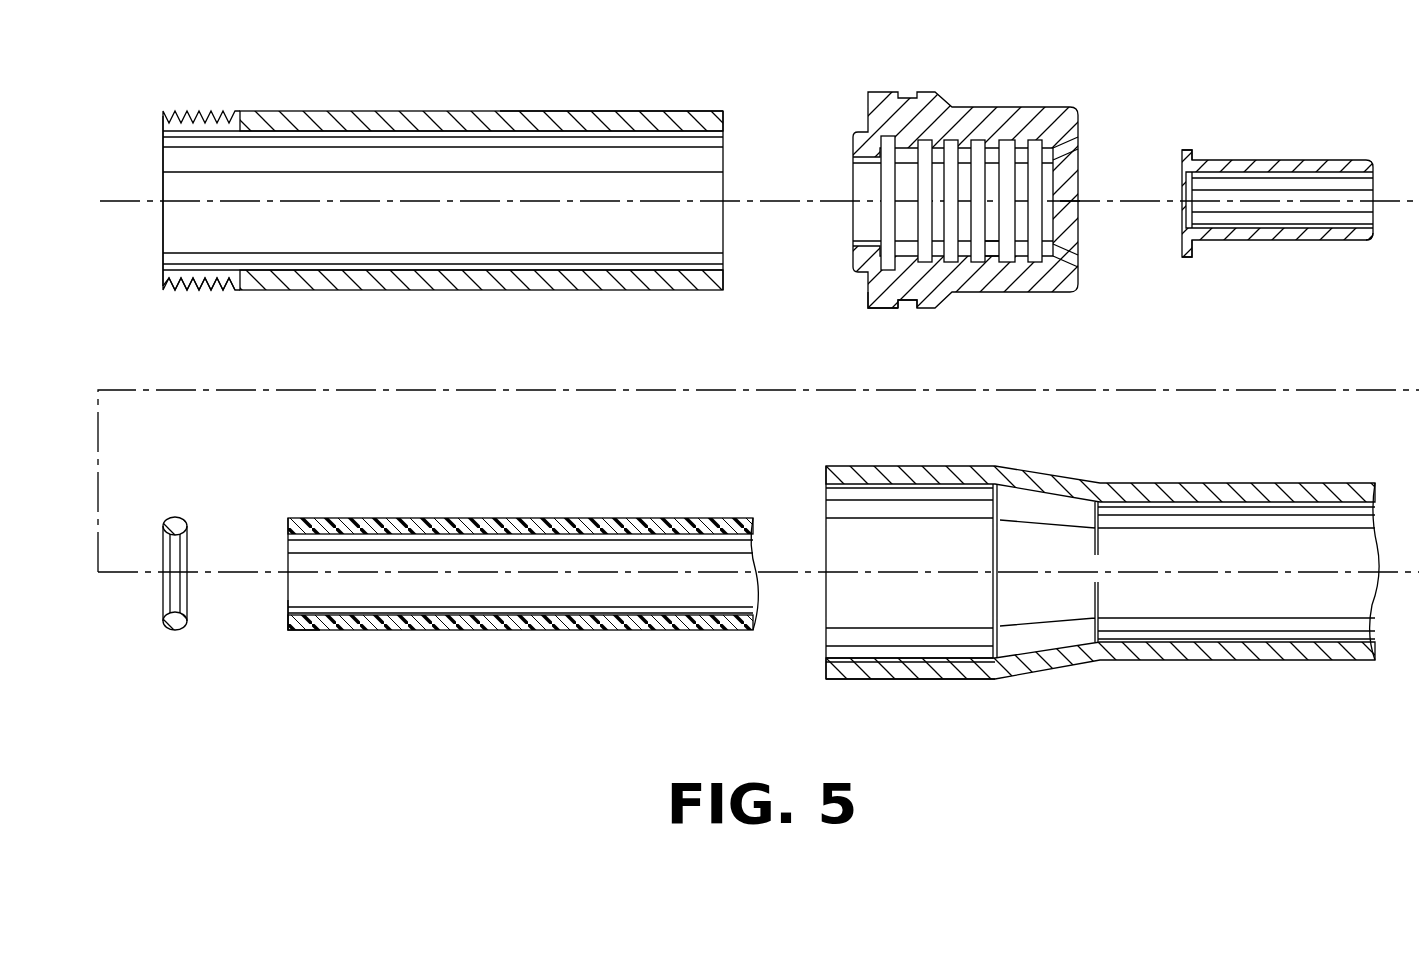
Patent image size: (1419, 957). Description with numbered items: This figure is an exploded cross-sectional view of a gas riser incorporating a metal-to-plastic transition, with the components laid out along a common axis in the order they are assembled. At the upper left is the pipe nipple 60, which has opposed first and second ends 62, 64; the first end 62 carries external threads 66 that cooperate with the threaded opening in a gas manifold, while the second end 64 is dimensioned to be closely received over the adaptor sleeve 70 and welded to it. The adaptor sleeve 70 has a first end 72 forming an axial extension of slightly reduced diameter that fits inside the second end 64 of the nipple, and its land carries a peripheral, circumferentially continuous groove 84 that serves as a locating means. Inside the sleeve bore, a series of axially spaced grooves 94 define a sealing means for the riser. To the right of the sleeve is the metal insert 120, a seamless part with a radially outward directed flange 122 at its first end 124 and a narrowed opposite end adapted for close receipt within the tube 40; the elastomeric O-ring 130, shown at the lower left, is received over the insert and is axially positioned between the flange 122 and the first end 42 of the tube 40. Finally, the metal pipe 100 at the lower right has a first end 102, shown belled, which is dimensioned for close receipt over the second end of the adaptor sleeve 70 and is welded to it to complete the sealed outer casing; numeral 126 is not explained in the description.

The pipe nipple 60 is at (508, 106).
The second end 64 is at (676, 120).
The first end 62 is at (158, 274).
The external threads 66 is at (214, 282).
The adaptor sleeve 70 is at (981, 100).
The first end 72 is at (882, 308).
The groove 84 is at (910, 306).
The axially spaced grooves 94 is at (993, 258).
The metal insert 120 is at (1318, 156).
The flange 122 is at (1193, 152).
The first end 124 is at (1185, 242).
The insert sleeve end 126 is at (1373, 238).
The O-ring 130 is at (200, 522).
The tube 40 is at (513, 510).
The first end 42 is at (288, 612).
The metal pipe 100 is at (1080, 470).
The first end 102 is at (894, 668).